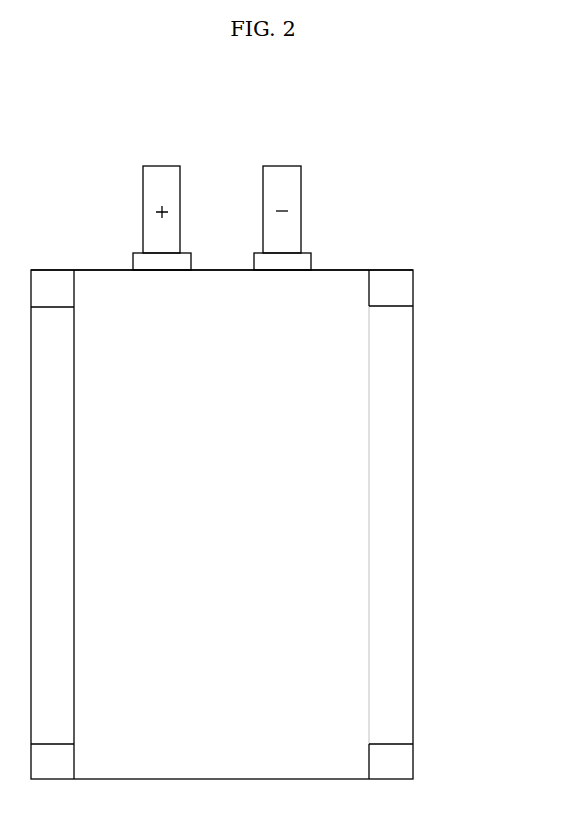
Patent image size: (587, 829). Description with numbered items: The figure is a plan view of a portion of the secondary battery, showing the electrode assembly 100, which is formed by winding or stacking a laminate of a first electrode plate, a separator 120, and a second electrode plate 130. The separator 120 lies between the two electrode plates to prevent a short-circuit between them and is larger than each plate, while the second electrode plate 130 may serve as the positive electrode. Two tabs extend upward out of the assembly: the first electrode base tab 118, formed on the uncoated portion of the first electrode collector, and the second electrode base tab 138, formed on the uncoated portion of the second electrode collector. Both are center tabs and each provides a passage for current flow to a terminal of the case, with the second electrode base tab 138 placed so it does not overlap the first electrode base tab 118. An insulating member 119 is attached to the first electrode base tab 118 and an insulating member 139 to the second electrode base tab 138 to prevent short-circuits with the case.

The electrode assembly 100 is at (423, 607).
The first electrode base tab 118 is at (283, 172).
The insulating member 119 is at (292, 260).
The separator 120 is at (393, 268).
The second electrode plate 130 is at (400, 355).
The second electrode base tab 138 is at (160, 172).
The insulating member 139 is at (152, 258).